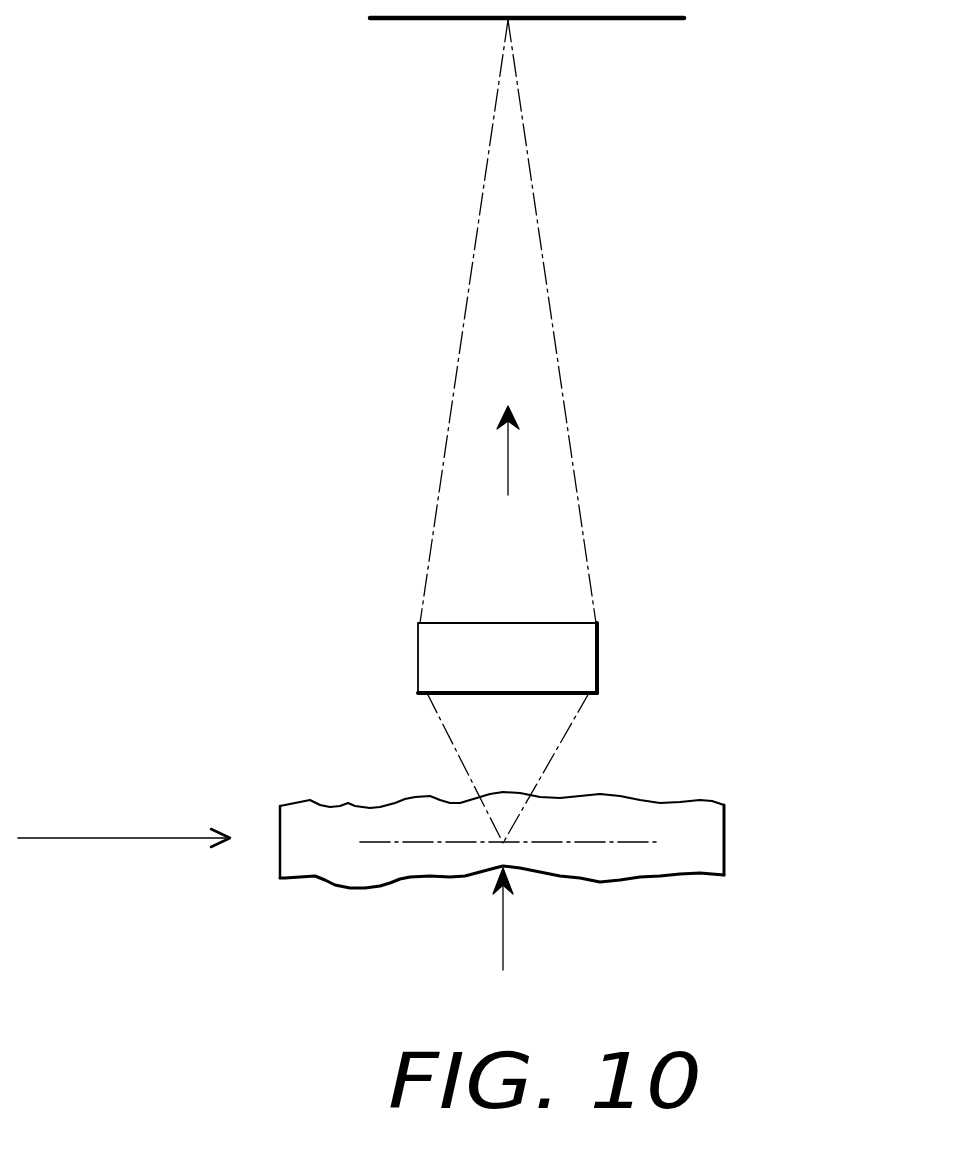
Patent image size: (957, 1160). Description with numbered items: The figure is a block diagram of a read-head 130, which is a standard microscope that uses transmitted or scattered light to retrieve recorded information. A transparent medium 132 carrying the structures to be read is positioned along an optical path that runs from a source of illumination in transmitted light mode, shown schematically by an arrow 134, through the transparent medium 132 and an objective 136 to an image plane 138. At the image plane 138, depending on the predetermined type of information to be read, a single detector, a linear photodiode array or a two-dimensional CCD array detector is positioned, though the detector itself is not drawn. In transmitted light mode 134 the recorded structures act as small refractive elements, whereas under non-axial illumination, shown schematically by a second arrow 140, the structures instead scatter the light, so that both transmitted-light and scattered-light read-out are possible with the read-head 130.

The read-head 130 is at (268, 885).
The transparent medium 132 is at (710, 830).
The source of illumination in transmitted light mode 134 is at (505, 932).
The objective 136 is at (597, 670).
The image plane 138 is at (422, 20).
The non-axial illumination 140 is at (127, 838).